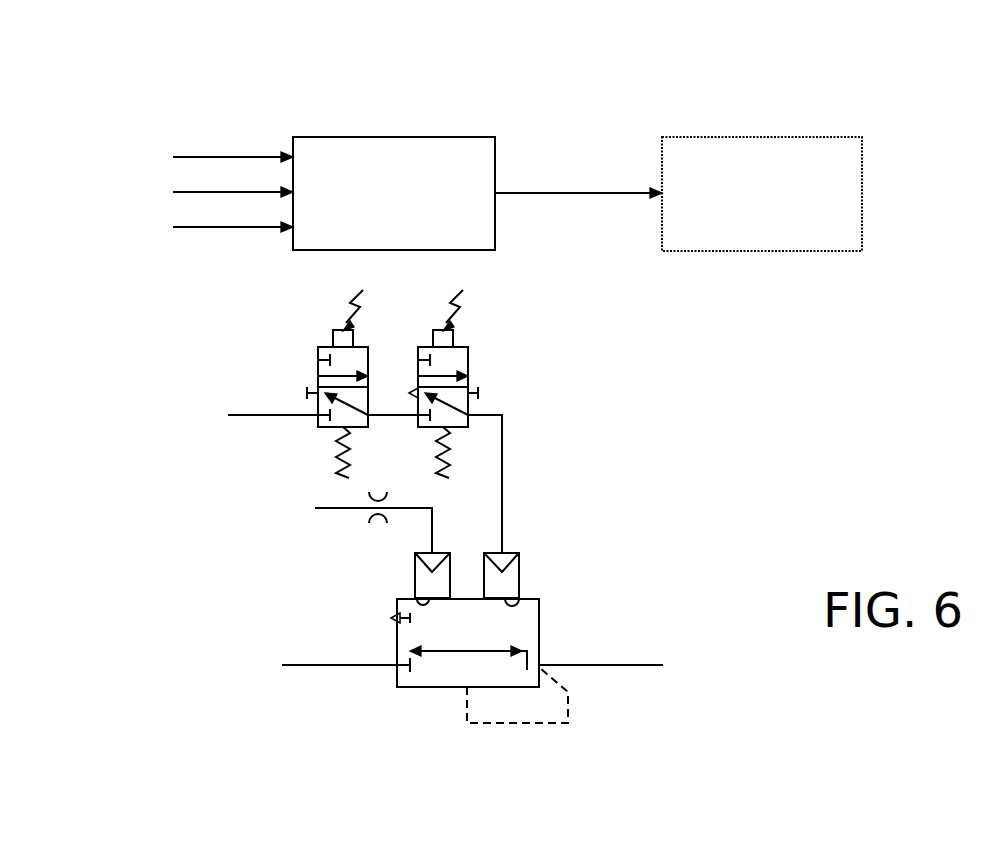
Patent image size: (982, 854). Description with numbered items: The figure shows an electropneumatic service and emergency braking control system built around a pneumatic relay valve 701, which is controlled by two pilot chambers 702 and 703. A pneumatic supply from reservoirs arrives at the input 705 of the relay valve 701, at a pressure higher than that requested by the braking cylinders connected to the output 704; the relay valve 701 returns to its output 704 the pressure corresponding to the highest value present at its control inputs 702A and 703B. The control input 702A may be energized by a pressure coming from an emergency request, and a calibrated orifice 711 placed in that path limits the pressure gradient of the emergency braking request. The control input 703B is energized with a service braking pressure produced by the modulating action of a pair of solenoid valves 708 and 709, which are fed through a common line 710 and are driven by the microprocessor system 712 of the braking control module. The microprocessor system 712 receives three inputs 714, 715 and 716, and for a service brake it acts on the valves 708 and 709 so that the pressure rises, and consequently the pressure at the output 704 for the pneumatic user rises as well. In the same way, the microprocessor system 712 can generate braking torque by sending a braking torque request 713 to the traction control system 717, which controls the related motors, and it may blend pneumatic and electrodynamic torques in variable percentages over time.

The pneumatic relay valve 701 is at (539, 637).
The pilot chamber 702 is at (415, 577).
The control input 702A is at (423, 604).
The pilot chamber 703 is at (519, 578).
The control input 703B is at (530, 598).
The output 704 is at (632, 668).
The input 705 is at (317, 668).
The solenoid valve 708 is at (318, 347).
The solenoid valve 709 is at (470, 353).
The supply line 710 is at (228, 415).
The calibrated orifice 711 is at (378, 490).
The microprocessor system 712 is at (418, 137).
The braking torque request 713 is at (555, 193).
The first input 714 is at (203, 156).
The second input 715 is at (193, 191).
The third input 716 is at (190, 227).
The traction control system 717 is at (775, 137).